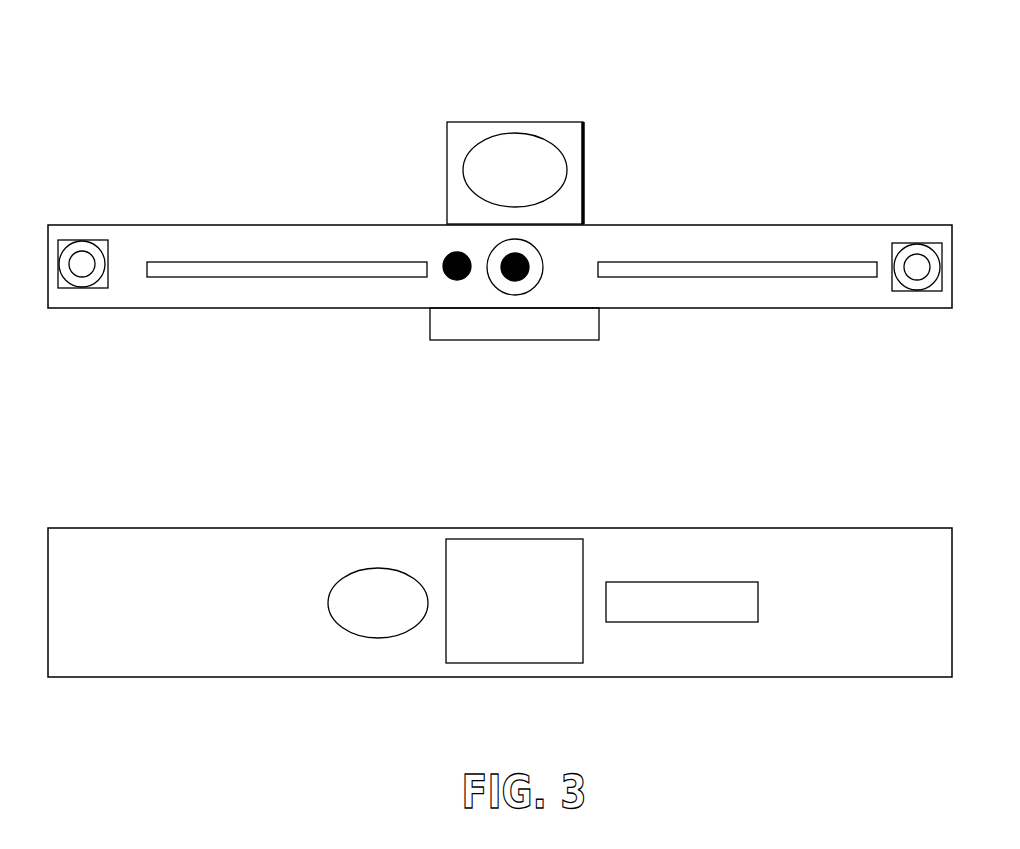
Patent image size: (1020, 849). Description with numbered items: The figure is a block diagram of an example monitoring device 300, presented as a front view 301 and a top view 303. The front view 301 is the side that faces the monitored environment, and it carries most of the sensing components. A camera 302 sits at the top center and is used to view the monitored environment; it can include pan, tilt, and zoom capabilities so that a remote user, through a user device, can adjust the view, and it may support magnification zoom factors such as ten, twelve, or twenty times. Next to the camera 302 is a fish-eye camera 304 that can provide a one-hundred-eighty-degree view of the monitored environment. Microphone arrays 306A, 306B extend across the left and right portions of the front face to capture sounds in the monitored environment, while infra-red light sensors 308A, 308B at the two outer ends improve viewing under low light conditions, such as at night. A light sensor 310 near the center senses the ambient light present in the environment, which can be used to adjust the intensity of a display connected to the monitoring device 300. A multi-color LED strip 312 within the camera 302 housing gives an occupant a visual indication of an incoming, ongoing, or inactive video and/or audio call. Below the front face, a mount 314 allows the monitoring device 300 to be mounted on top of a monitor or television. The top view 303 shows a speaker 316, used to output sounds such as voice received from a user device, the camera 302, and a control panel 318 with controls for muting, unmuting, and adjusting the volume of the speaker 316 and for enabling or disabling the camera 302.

The monitoring device 300 is at (102, 138).
The front view 301 is at (240, 185).
The camera 302 is at (482, 122).
The top view 303 is at (250, 518).
The fish-eye camera 304 is at (538, 249).
The microphone array 306A is at (177, 262).
The microphone array 306B is at (695, 262).
The infra-red light sensor 308A is at (73, 289).
The infra-red light sensor 308B is at (905, 292).
The light sensor 310 is at (450, 275).
The multi-color LED strip 312 is at (568, 187).
The mount 314 is at (482, 342).
The speaker 316 is at (370, 567).
The control panel 318 is at (660, 582).